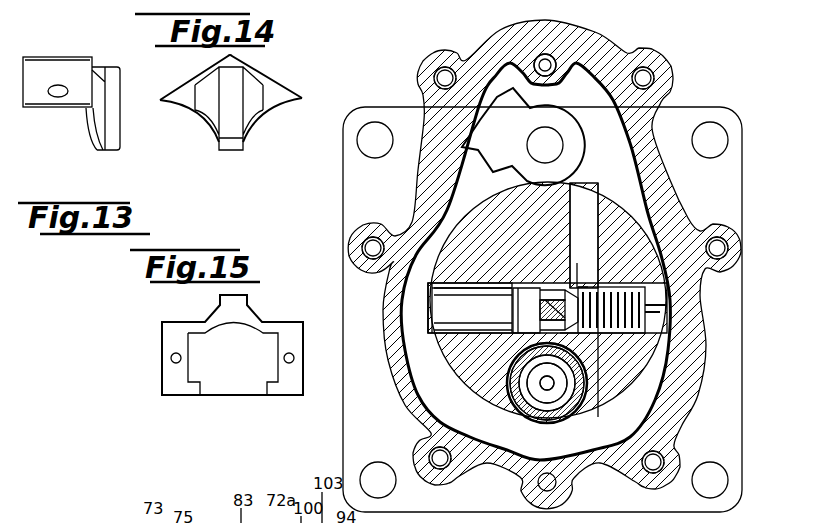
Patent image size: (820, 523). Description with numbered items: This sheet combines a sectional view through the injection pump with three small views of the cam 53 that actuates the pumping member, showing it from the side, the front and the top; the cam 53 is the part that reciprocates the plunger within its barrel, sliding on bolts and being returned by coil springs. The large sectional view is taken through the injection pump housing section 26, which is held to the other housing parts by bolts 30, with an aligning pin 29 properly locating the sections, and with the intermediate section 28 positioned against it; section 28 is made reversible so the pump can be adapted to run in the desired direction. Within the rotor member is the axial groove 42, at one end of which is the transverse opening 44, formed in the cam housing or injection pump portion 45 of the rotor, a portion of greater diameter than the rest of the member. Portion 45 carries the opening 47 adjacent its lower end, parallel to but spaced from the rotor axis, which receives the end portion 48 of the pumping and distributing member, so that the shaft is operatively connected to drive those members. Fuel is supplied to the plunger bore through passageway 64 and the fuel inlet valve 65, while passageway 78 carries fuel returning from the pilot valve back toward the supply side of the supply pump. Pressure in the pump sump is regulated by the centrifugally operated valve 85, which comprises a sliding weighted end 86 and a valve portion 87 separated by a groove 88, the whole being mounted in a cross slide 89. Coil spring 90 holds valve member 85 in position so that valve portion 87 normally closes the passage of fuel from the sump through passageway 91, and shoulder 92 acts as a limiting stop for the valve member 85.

In FIG. 13, the cam 53 is at (42, 92).
In FIG. 14, the cam 53 is at (277, 97).
In FIG. 15, the cam 53 is at (170, 335).
In FIG. 6, the injection pump housing section 26 is at (618, 58).
In FIG. 6, the intermediate section 28 is at (517, 130).
In FIG. 6, the aligning pin 29 is at (538, 482).
In FIG. 6, the bolts 30 is at (437, 78).
In FIG. 6, the axial groove 42 is at (520, 300).
In FIG. 6, the transverse opening 44 is at (428, 320).
In FIG. 6, the cam housing or injection pump portion 45 is at (482, 215).
In FIG. 6, the opening 47 is at (555, 395).
In FIG. 6, the end portion 48 is at (510, 423).
In FIG. 6, the passageway 64 is at (547, 390).
In FIG. 6, the fuel inlet valve 65 is at (561, 395).
In FIG. 6, the passageway 78 is at (553, 72).
In FIG. 6, the centrifugally operated valve 85 is at (395, 335).
In FIG. 6, the sliding weighted end 86 is at (462, 311).
In FIG. 6, the valve portion 87 is at (585, 277).
In FIG. 6, the groove 88 is at (570, 337).
In FIG. 6, the cross slide 89 is at (577, 263).
In FIG. 6, the coil spring 90 is at (685, 357).
In FIG. 6, the passageway 91 is at (585, 207).
In FIG. 6, the shoulder 92 is at (523, 330).